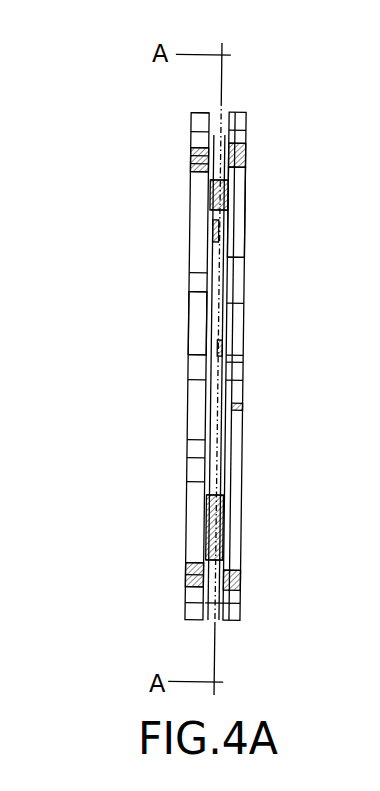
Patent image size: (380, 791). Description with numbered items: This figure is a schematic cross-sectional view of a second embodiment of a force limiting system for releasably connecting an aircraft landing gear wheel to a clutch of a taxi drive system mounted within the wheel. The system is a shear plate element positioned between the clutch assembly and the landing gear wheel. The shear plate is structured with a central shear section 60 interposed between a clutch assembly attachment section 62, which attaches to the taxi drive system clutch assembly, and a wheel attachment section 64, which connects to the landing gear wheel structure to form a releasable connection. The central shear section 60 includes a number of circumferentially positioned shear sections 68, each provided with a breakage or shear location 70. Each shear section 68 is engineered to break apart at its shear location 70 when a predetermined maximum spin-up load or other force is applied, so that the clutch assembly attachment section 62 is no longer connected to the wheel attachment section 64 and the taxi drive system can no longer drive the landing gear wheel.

The central shear section 60 is at (191, 483).
The clutch assembly attachment section 62 is at (196, 214).
The wheel attachment section 64 is at (226, 258).
The shear section 68 is at (191, 327).
The shear location 70 is at (245, 206).